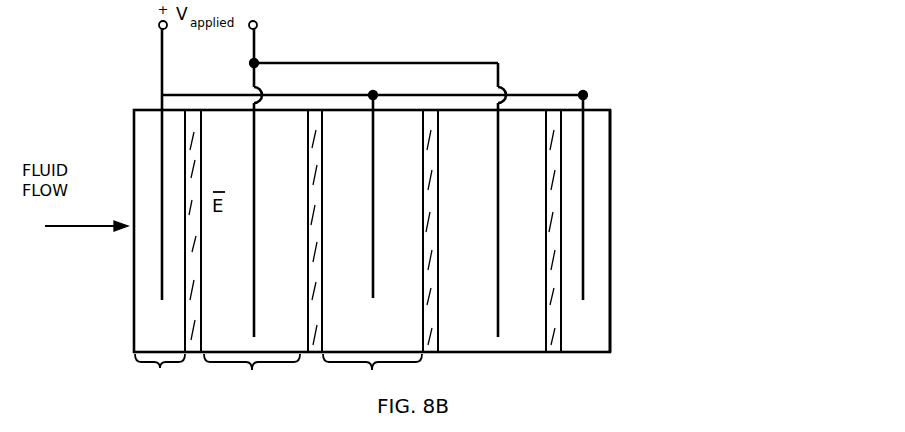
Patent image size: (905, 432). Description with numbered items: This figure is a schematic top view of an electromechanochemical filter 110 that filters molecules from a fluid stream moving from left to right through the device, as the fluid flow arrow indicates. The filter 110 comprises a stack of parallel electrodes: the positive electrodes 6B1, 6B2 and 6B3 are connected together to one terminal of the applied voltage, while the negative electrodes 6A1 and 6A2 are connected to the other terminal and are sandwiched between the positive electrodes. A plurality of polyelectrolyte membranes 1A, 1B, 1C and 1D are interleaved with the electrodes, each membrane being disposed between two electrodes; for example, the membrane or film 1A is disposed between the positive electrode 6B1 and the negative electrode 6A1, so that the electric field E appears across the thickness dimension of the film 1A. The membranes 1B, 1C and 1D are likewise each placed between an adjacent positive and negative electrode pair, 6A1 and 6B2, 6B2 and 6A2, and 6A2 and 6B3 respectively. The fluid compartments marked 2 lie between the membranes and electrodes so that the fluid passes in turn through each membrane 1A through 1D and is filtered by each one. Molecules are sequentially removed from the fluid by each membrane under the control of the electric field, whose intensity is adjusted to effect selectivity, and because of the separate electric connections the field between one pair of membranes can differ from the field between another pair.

The positive electrode 6B1 is at (160, 128).
The negative electrode 6A1 is at (256, 172).
The positive electrode 6B2 is at (372, 143).
The negative electrode 6A2 is at (496, 133).
The positive electrode 6B3 is at (585, 160).
The membrane 1A is at (202, 333).
The membrane 1B is at (323, 262).
The membrane 1C is at (439, 255).
The membrane 1D is at (545, 262).
The fluid compartment 2 is at (171, 328).
The electromechanochemical filter 110 is at (624, 226).